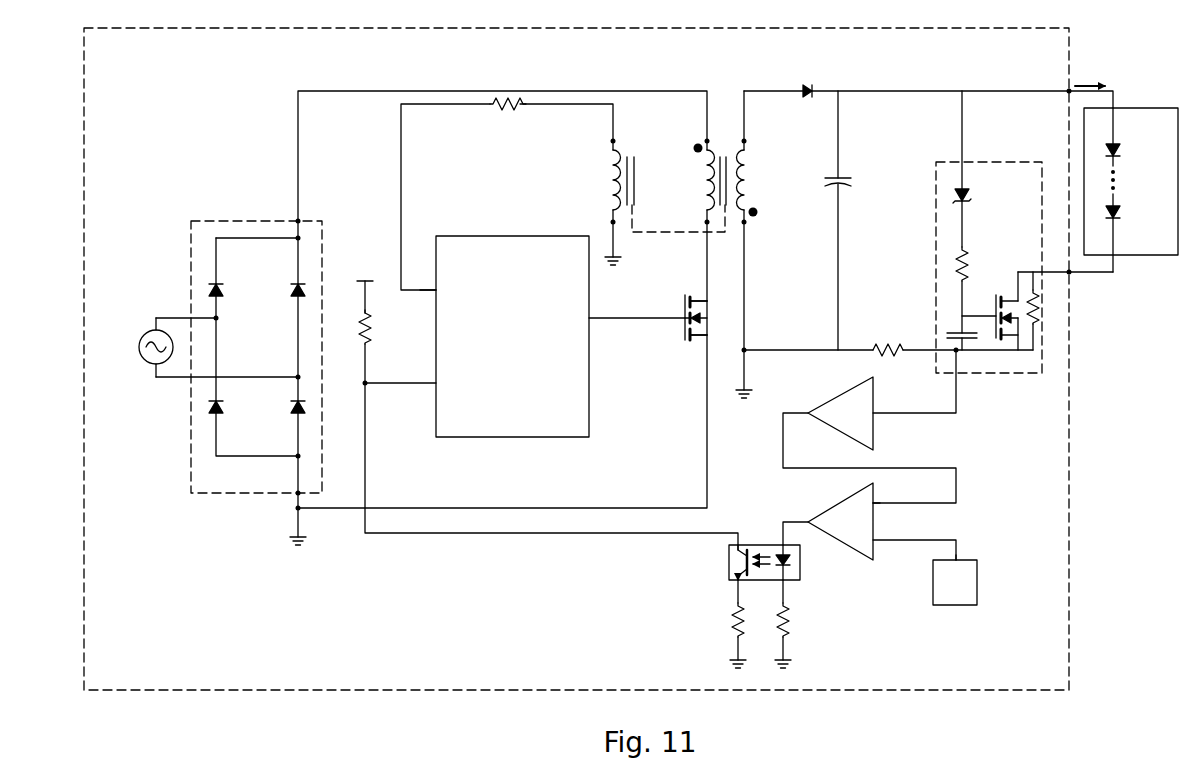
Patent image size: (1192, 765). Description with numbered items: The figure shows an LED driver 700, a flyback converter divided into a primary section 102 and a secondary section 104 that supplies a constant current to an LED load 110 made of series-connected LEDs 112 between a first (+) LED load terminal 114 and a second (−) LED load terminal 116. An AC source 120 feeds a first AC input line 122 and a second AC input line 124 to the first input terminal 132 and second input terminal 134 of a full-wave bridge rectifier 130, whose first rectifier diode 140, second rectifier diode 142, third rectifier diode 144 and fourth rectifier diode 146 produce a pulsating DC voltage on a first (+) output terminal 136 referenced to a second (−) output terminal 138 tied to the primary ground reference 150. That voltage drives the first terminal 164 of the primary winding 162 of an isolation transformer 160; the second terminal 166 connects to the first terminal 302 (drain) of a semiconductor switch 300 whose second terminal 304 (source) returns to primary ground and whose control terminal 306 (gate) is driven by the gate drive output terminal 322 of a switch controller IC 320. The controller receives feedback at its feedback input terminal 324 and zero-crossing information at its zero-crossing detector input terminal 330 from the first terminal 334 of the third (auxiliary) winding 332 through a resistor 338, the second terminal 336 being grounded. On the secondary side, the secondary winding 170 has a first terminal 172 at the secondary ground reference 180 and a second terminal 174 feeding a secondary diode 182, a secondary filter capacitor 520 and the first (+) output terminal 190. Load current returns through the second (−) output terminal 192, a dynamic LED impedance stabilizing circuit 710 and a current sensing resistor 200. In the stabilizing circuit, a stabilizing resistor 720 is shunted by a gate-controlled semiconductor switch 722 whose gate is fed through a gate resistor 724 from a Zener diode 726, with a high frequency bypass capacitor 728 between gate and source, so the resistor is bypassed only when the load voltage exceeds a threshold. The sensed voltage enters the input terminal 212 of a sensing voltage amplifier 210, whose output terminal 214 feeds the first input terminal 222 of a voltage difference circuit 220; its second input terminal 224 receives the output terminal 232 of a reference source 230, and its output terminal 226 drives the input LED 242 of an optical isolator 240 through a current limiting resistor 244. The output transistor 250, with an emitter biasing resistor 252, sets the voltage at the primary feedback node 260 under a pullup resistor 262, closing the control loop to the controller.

The LED driver 700 is at (538, 676).
The primary section 102 is at (368, 82).
The secondary section 104 is at (902, 66).
The LED load 110 is at (1172, 262).
The LEDs 112 is at (1117, 155).
The first (+) LED load terminal 114 is at (1116, 108).
The second (−) LED load terminal 116 is at (1116, 262).
The AC source 120 is at (146, 337).
The first AC input line 122 is at (176, 316).
The second AC input line 124 is at (176, 379).
The full-wave bridge rectifier 130 is at (239, 481).
The first input terminal 132 is at (218, 319).
The second input terminal 134 is at (296, 376).
The first (+) output terminal 136 is at (296, 218).
The second (−) output terminal 138 is at (296, 509).
The first rectifier diode 140 is at (222, 288).
The second rectifier diode 142 is at (296, 296).
The third rectifier diode 144 is at (222, 405).
The fourth rectifier diode 146 is at (296, 411).
The primary ground reference 150 is at (302, 536).
The isolation transformer 160 is at (629, 155).
The primary winding 162 is at (705, 180).
The first terminal of primary winding 164 is at (706, 139).
The second terminal of primary winding 166 is at (705, 222).
The secondary winding 170 is at (746, 172).
The first terminal of secondary winding 172 is at (746, 223).
The second terminal of secondary winding 174 is at (746, 140).
The secondary ground reference 180 is at (747, 391).
The secondary diode 182 is at (809, 85).
The first (+) output terminal 190 is at (1066, 94).
The second (−) output terminal 192 is at (1072, 275).
The current sensing resistor 200 is at (888, 349).
The sensing voltage amplifier 210 is at (862, 378).
The input terminal of sensing voltage amplifier 212 is at (876, 419).
The output terminal of sensing voltage amplifier 214 is at (812, 418).
The voltage difference circuit 220 is at (842, 502).
The first input terminal of voltage difference circuit 222 is at (876, 502).
The second input terminal of voltage difference circuit 224 is at (876, 541).
The output terminal of voltage difference circuit 226 is at (806, 520).
The reference source 230 is at (931, 586).
The output terminal of reference source 232 is at (958, 558).
The optical isolator 240 is at (766, 545).
The input LED 242 is at (790, 554).
The current limiting resistor 244 is at (786, 612).
The output transistor 250 is at (727, 566).
The emitter biasing resistor 252 is at (735, 612).
The primary feedback node 260 is at (367, 386).
The pullup resistor 262 is at (369, 340).
The semiconductor switch 300 is at (688, 316).
The first terminal of semiconductor switch 302 is at (706, 299).
The second terminal of semiconductor switch 304 is at (704, 338).
The control terminal of semiconductor switch 306 is at (684, 324).
The switch controller integrated circuit 320 is at (498, 430).
The gate drive output terminal 322 is at (620, 317).
The feedback input terminal 324 is at (434, 382).
The zero-crossing detector input terminal 330 is at (434, 291).
The third (auxiliary) winding 332 is at (613, 178).
The first terminal of third winding 334 is at (612, 139).
The second terminal of third winding 336 is at (612, 223).
The resistor 338 is at (506, 106).
The secondary filter capacitor 520 is at (842, 182).
The dynamic LED impedance stabilizing circuit 710 is at (988, 162).
The stabilizing resistor 720 is at (1037, 320).
The gate-controlled semiconductor switch 722 is at (999, 299).
The gate resistor 724 is at (966, 262).
The Zener diode 726 is at (966, 196).
The high frequency bypass capacitor 728 is at (946, 334).